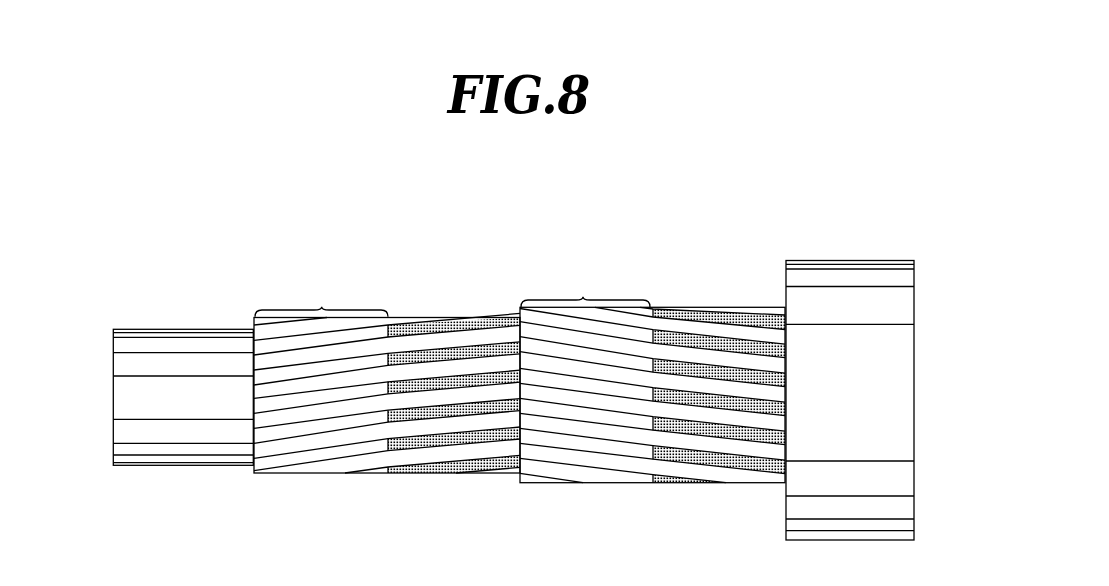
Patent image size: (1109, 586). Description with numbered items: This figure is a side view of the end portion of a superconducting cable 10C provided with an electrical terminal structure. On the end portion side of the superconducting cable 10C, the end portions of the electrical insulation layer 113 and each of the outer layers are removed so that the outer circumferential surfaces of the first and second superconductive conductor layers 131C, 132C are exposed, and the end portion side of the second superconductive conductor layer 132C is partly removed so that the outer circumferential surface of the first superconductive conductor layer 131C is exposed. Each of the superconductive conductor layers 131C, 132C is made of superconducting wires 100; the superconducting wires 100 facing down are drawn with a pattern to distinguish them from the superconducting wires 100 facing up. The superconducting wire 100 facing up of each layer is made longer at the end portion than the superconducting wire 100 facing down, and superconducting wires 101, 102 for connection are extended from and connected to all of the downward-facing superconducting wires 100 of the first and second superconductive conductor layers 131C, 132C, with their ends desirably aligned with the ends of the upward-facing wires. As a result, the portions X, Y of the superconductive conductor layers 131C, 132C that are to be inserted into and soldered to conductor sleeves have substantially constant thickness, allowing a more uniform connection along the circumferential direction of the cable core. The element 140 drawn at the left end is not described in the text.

The superconducting cable 10C is at (486, 242).
The superconducting wire 100 is at (437, 338).
The superconducting wire for connection 101 is at (289, 343).
The superconducting wire for connection 102 is at (592, 327).
The electrical insulation layer 113 is at (856, 261).
The first superconductive conductor layer 131C is at (460, 316).
The second superconductive conductor layer 132C is at (752, 306).
The external electrode 140 is at (205, 328).
The portion X is at (321, 296).
The portion Y is at (585, 285).